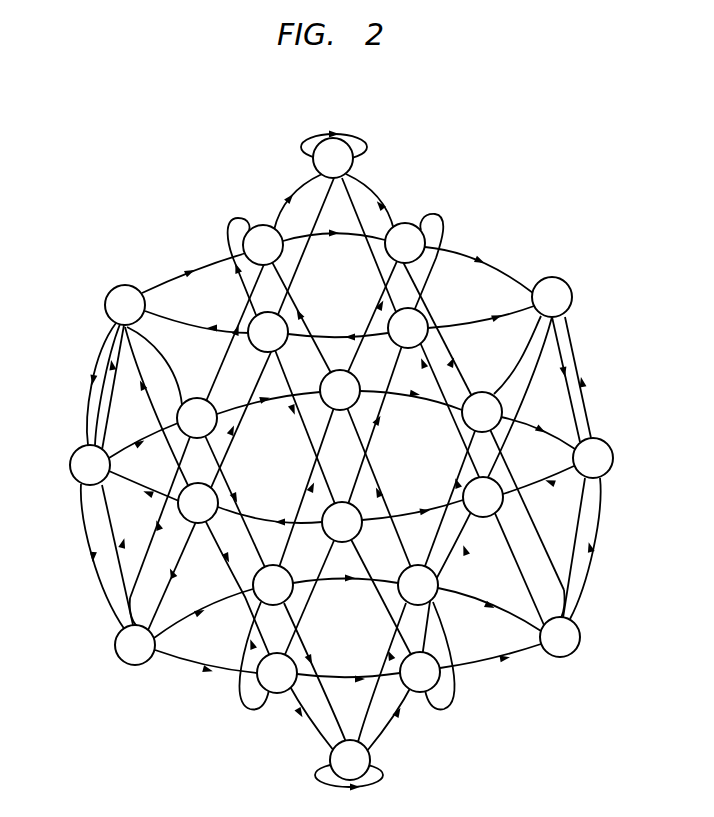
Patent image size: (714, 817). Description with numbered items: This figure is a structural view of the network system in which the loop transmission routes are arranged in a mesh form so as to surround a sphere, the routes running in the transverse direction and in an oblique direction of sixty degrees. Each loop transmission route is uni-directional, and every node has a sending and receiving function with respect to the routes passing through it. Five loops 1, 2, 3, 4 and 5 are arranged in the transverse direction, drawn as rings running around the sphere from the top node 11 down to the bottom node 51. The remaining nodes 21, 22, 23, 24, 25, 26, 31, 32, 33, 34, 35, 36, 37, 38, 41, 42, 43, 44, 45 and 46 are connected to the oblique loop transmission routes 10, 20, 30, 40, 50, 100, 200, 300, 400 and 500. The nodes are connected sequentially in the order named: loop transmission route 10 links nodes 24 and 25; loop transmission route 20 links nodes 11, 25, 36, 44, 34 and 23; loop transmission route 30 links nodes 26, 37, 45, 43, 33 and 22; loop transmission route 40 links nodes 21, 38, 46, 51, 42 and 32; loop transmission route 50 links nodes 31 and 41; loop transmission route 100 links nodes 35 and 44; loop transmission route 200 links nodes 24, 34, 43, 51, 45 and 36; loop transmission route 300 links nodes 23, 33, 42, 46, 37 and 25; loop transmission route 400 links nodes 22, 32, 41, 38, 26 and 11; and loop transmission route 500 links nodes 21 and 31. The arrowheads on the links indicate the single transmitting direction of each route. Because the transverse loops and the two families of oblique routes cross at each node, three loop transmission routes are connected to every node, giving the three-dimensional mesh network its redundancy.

The loop 1 is at (360, 136).
The loop 2 is at (497, 265).
The loop 3 is at (557, 433).
The loop 4 is at (519, 658).
The loop 5 is at (380, 773).
The loop transmission route 10 is at (92, 372).
The loop transmission route 20 is at (293, 188).
The loop transmission route 30 is at (440, 215).
The loop transmission route 40 is at (540, 352).
The loop transmission route 50 is at (603, 497).
The loop transmission route 100 is at (86, 520).
The loop transmission route 200 is at (150, 337).
The loop transmission route 300 is at (226, 233).
The loop transmission route 400 is at (372, 183).
The loop transmission route 500 is at (587, 367).
The node 11 is at (333, 158).
The node 21 is at (552, 297).
The node 22 is at (408, 328).
The node 23 is at (268, 332).
The node 24 is at (125, 305).
The node 25 is at (263, 245).
The node 26 is at (405, 243).
The node 31 is at (593, 458).
The node 32 is at (483, 497).
The node 33 is at (342, 522).
The node 34 is at (198, 503).
The node 35 is at (90, 465).
The node 36 is at (197, 418).
The node 37 is at (340, 390).
The node 38 is at (482, 412).
The node 41 is at (560, 637).
The node 42 is at (420, 672).
The node 43 is at (277, 673).
The node 44 is at (135, 645).
The node 45 is at (273, 585).
The node 46 is at (418, 585).
The node 51 is at (350, 760).